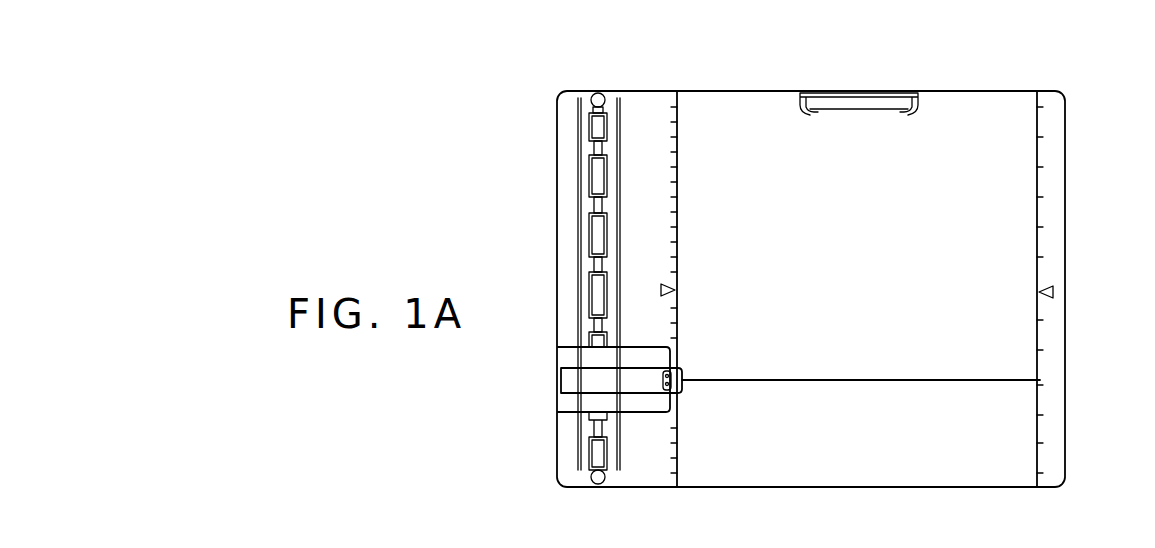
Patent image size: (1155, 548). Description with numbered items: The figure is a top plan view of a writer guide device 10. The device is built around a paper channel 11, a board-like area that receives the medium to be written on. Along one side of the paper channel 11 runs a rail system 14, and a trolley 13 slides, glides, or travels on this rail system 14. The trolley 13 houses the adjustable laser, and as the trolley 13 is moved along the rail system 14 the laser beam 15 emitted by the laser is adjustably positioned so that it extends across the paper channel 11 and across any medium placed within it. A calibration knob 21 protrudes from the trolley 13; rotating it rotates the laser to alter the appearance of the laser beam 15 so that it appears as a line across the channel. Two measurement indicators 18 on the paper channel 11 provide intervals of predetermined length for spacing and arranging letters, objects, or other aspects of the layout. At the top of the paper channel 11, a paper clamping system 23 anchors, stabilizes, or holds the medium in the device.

The writer guide device 10 is at (654, 92).
The paper channel 11 is at (840, 488).
The trolley 13 is at (566, 402).
The rail system 14 is at (598, 487).
The laser beam 15 is at (938, 382).
The measurement indicator 18 is at (683, 140).
The calibration knob 21 is at (668, 382).
The paper clamping system 23 is at (884, 93).